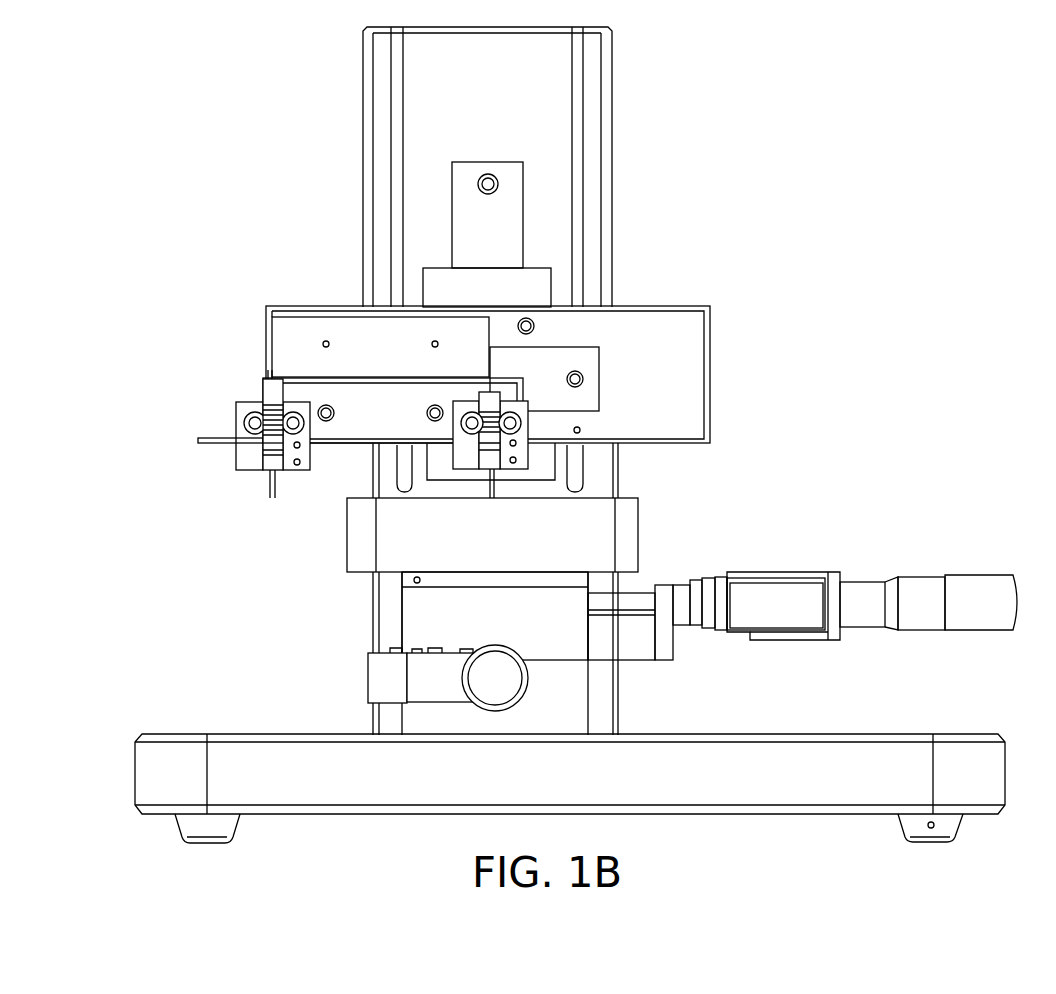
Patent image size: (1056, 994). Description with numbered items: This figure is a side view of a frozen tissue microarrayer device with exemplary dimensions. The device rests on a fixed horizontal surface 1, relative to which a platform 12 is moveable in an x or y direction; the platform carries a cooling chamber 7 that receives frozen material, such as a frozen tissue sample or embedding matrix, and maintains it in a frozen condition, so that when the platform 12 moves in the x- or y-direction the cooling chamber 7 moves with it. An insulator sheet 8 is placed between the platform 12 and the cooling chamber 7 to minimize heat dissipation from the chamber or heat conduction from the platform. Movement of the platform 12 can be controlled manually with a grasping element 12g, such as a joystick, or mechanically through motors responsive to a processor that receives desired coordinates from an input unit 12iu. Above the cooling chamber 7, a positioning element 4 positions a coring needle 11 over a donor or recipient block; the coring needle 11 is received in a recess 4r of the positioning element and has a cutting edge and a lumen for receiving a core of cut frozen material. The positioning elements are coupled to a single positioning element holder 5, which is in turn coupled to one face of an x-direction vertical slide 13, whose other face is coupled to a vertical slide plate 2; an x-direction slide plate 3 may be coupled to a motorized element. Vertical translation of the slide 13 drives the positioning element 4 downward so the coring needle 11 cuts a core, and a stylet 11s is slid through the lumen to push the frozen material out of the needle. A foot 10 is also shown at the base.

The fixed horizontal surface 1 is at (517, 782).
The vertical slide plate 2 is at (612, 155).
The x-direction slide plate 3 is at (668, 396).
The positioning element 4 is at (244, 423).
The recess 4r is at (266, 470).
The positioning element holder 5 is at (357, 428).
The cooling chamber 7 is at (640, 515).
The insulator sheet 8 is at (438, 578).
The foot 10 is at (927, 825).
The coring needle 11 is at (278, 488).
The stylet 11s is at (262, 385).
The platform 12 is at (511, 616).
The input unit 12iu is at (757, 572).
The grasping element 12g is at (970, 575).
The x-direction vertical slide 13 is at (510, 302).